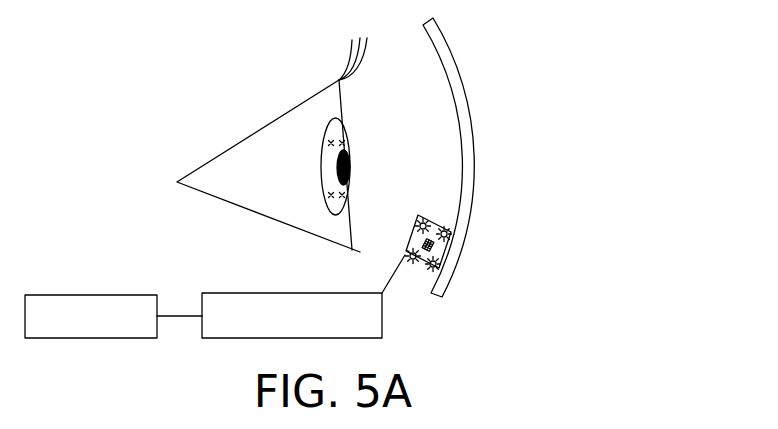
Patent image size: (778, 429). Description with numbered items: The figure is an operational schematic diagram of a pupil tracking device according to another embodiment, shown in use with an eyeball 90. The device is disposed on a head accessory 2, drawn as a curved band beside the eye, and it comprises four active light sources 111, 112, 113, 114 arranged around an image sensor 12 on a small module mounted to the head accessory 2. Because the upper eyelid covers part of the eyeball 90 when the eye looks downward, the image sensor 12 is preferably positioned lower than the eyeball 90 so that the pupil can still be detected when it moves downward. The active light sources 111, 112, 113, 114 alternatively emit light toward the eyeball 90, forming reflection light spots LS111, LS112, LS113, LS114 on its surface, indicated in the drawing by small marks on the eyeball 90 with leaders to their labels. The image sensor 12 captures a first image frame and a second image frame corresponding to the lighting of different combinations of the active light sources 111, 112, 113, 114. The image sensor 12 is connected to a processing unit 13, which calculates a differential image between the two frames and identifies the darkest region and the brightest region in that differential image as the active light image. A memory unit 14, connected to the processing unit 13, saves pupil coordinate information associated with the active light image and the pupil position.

The head accessory 2 is at (452, 77).
The image sensor 12 is at (480, 246).
The processing unit 13 is at (210, 293).
The memory unit 14 is at (124, 295).
The eyeball 90 is at (339, 80).
The active light source 111 is at (447, 229).
The active light source 112 is at (424, 220).
The active light source 113 is at (437, 268).
The active light source 114 is at (411, 261).
The reflection light spot LS111 is at (331, 143).
The reflection light spot LS112 is at (342, 143).
The reflection light spot LS113 is at (331, 197).
The reflection light spot LS114 is at (342, 197).